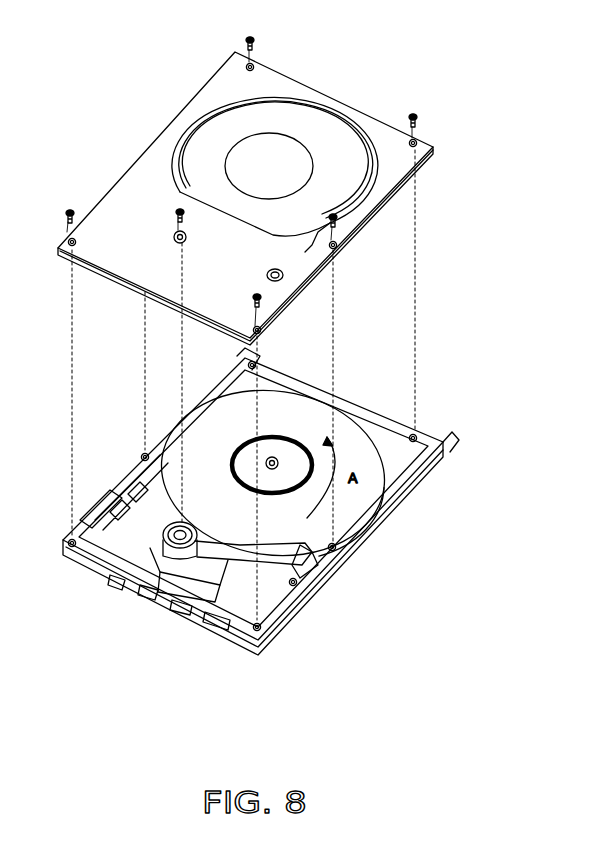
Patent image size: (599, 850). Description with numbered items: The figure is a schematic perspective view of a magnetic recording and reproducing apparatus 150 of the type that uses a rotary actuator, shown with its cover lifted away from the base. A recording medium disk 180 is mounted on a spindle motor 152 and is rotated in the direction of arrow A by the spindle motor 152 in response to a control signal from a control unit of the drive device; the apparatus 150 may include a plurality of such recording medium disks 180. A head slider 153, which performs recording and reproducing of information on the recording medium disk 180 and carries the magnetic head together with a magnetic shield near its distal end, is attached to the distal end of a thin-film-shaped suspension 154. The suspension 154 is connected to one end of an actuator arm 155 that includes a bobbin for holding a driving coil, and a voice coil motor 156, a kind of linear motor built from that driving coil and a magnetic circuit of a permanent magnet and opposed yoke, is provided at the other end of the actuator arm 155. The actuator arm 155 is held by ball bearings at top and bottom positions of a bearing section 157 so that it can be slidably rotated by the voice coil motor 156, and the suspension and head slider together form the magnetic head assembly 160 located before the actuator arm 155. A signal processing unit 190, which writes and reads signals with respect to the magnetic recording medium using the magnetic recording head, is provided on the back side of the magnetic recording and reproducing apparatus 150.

The magnetic recording and reproducing apparatus 150 is at (356, 76).
The spindle motor 152 is at (407, 433).
The head slider 153 is at (297, 572).
The suspension 154 is at (215, 623).
The actuator arm 155 is at (180, 608).
The voice coil motor 156 is at (147, 592).
The bearing section 157 is at (122, 583).
The magnetic head assembly 160 is at (228, 543).
The recording medium disk 180 is at (305, 417).
The signal processing unit 190 is at (88, 517).